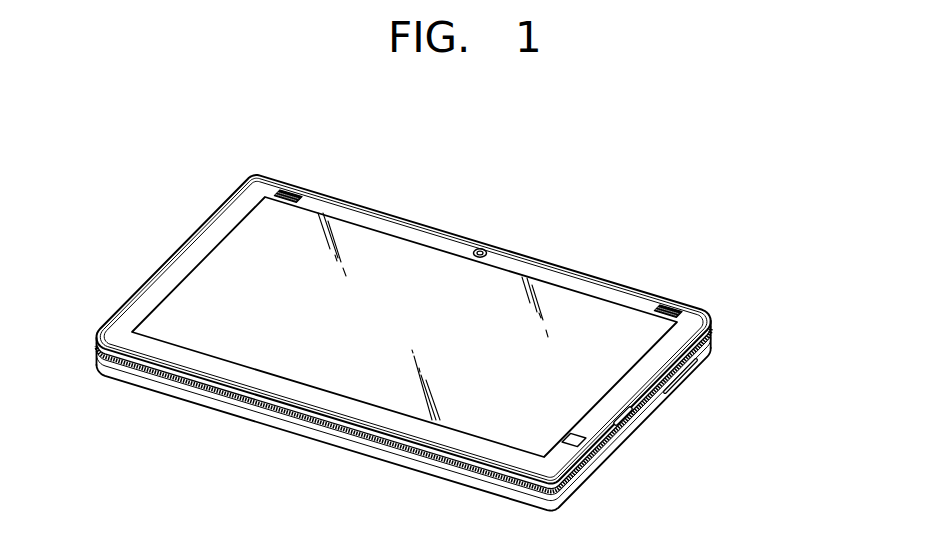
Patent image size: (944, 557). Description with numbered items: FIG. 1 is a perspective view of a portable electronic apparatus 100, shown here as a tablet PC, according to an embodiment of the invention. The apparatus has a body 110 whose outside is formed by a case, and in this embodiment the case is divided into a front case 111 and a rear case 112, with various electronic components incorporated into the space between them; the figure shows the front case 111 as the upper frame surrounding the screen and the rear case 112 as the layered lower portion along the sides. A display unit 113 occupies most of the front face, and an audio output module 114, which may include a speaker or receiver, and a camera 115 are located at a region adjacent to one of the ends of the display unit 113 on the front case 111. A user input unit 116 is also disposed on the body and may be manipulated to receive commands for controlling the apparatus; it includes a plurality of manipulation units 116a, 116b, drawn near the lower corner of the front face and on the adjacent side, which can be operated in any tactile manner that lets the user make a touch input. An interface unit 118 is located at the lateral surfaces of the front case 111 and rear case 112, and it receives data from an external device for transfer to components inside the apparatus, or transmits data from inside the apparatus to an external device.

The portable electronic apparatus 100 is at (172, 200).
The body 110 is at (798, 290).
The front case 111 is at (714, 325).
The rear case 112 is at (712, 348).
The display unit 113 is at (627, 322).
The audio output module 114 is at (677, 310).
The camera 115 is at (484, 248).
The user input unit 116 is at (748, 428).
The manipulation unit 116a is at (586, 443).
The manipulation unit 116b is at (631, 421).
The interface unit 118 is at (683, 375).